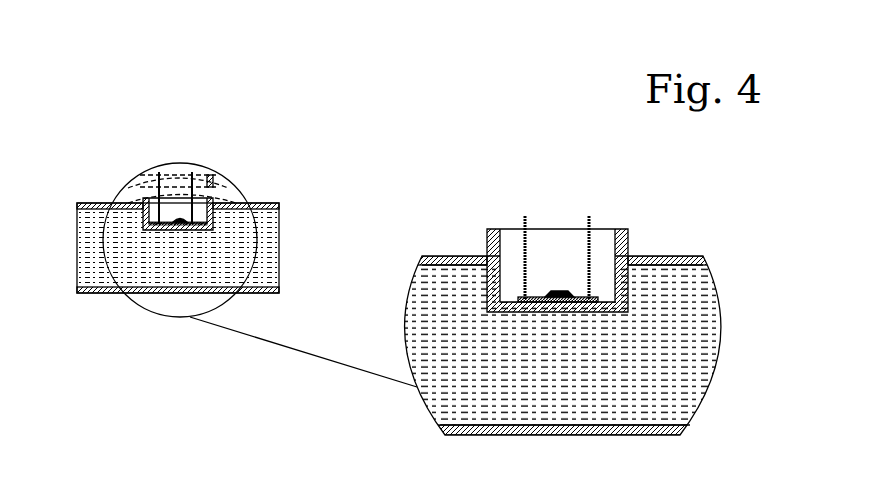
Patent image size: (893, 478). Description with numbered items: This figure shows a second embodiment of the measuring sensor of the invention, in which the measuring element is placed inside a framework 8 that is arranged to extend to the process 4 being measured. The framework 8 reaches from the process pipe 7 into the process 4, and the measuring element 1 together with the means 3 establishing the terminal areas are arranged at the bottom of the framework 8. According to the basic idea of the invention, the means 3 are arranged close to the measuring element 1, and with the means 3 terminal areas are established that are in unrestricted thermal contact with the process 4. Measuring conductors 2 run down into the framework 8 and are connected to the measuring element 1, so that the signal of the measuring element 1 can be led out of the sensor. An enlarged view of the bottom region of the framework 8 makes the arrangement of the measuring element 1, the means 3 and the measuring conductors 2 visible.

The measuring element 1 is at (176, 219).
The measuring conductors 2 is at (157, 203).
The means establishing terminal areas 3 is at (515, 283).
The process 4 is at (78, 240).
The process pipe 7 is at (267, 203).
The framework 8 is at (215, 182).